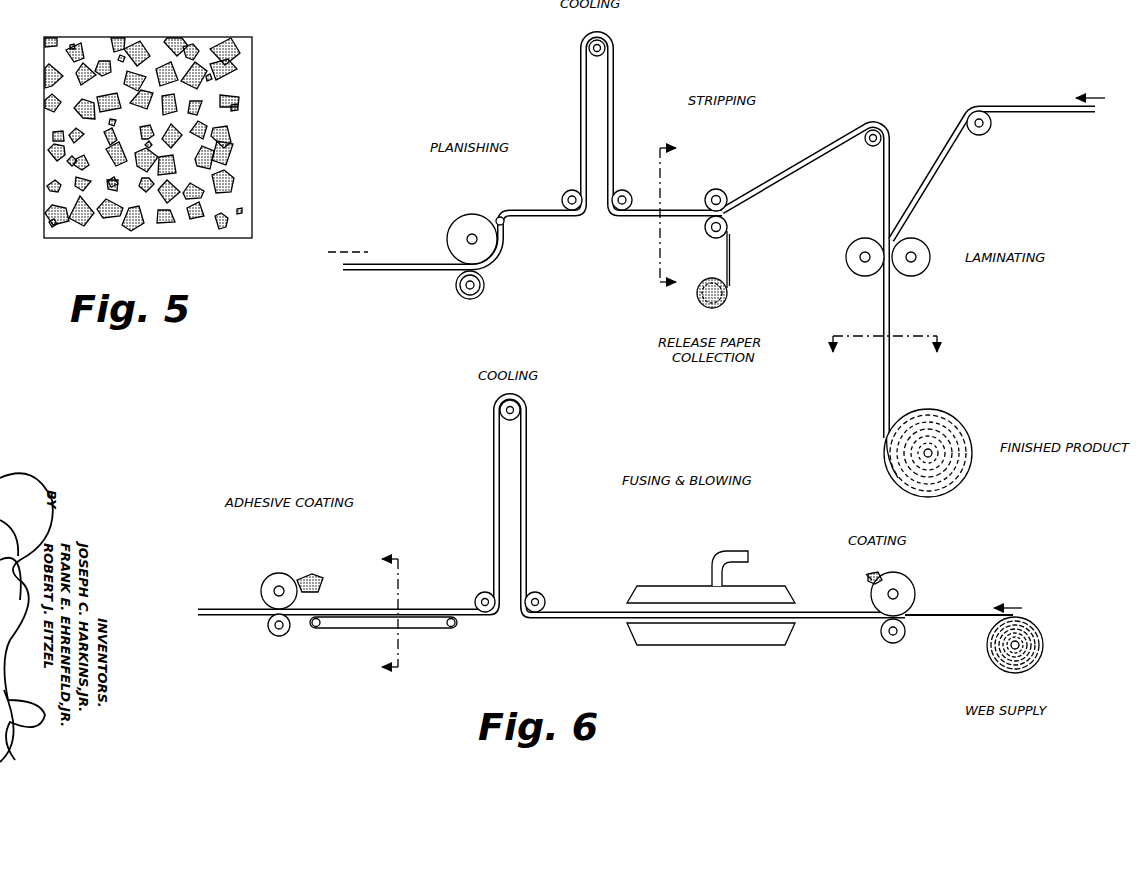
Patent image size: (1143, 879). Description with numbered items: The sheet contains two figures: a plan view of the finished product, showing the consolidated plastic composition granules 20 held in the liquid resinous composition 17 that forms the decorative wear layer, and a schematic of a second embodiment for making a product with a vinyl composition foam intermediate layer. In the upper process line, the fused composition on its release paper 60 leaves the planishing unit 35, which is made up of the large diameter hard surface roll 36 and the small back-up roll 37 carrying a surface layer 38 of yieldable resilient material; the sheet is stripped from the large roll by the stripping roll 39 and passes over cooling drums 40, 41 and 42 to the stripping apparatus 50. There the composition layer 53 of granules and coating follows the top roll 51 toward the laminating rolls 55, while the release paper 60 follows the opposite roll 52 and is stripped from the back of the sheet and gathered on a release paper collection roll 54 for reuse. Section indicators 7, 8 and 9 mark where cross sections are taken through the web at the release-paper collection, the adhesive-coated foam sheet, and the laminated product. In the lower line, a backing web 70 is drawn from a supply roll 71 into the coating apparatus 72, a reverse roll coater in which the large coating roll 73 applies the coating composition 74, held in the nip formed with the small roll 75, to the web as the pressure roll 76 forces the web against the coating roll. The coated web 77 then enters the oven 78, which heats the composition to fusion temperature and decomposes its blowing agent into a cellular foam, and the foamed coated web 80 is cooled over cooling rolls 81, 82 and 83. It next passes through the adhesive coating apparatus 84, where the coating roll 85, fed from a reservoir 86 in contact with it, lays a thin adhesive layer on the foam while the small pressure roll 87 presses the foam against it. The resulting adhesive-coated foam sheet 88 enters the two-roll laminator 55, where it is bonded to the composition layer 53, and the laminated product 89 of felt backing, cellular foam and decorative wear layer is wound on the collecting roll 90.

In FIG. 5, the liquid resinous composition 17 is at (50, 80).
In FIG. 5, the plastic composition granules 20 is at (172, 52).
In FIG. 6, the planishing unit 35 is at (422, 189).
In FIG. 6, the large diameter hard surface roll 36 is at (464, 220).
In FIG. 6, the small rubber-covered back-up roll 37 is at (462, 297).
In FIG. 6, the surface layer of yieldable resilient material 38 is at (483, 297).
In FIG. 6, the stripping roll 39 is at (505, 227).
In FIG. 6, the cooling drum 40 is at (564, 196).
In FIG. 6, the cooling drum 41 is at (586, 49).
In FIG. 6, the cooling drum 42 is at (632, 197).
In FIG. 6, the stripping apparatus 50 is at (730, 175).
In FIG. 6, the top stripping roll 51 is at (706, 194).
In FIG. 6, the opposite stripping roll 52 is at (706, 237).
In FIG. 6, the composition layer 53 is at (811, 160).
In FIG. 6, the release paper collection roll 54 is at (698, 299).
In FIG. 6, the laminating rolls 55 is at (944, 239).
In FIG. 6, the release paper 60 is at (374, 272).
In FIG. 6, the section line 7- 7 is at (678, 215).
In FIG. 6, the section line 9- 9 is at (882, 358).
In FIG. 6, the section line 8- 8 is at (378, 614).
In FIG. 6, the adhesive-coated foam sheet 88 is at (1023, 108).
In FIG. 6, the laminated product 89 is at (897, 338).
In FIG. 6, the collecting roll 90 is at (958, 424).
In FIG. 6, the backing web 70 is at (961, 618).
In FIG. 6, the supply roll 71 is at (1044, 646).
In FIG. 6, the coating apparatus 72 is at (934, 561).
In FIG. 6, the large coating roll 73 is at (872, 589).
In FIG. 6, the coating composition 74 is at (877, 574).
In FIG. 6, the small roll 75 is at (868, 575).
In FIG. 6, the pressure roll 76 is at (882, 641).
In FIG. 6, the coated web 77 is at (810, 613).
In FIG. 6, the oven 78 is at (760, 546).
In FIG. 6, the foamed coated web 80 is at (581, 613).
In FIG. 6, the cooling roll 81 is at (539, 592).
In FIG. 6, the cooling roll 82 is at (522, 413).
In FIG. 6, the cooling roll 83 is at (481, 592).
In FIG. 6, the adhesive coating apparatus 84 is at (243, 554).
In FIG. 6, the adhesive coating roll 85 is at (278, 573).
In FIG. 6, the adhesive reservoir 86 is at (320, 586).
In FIG. 6, the small pressure roll 87 is at (278, 637).